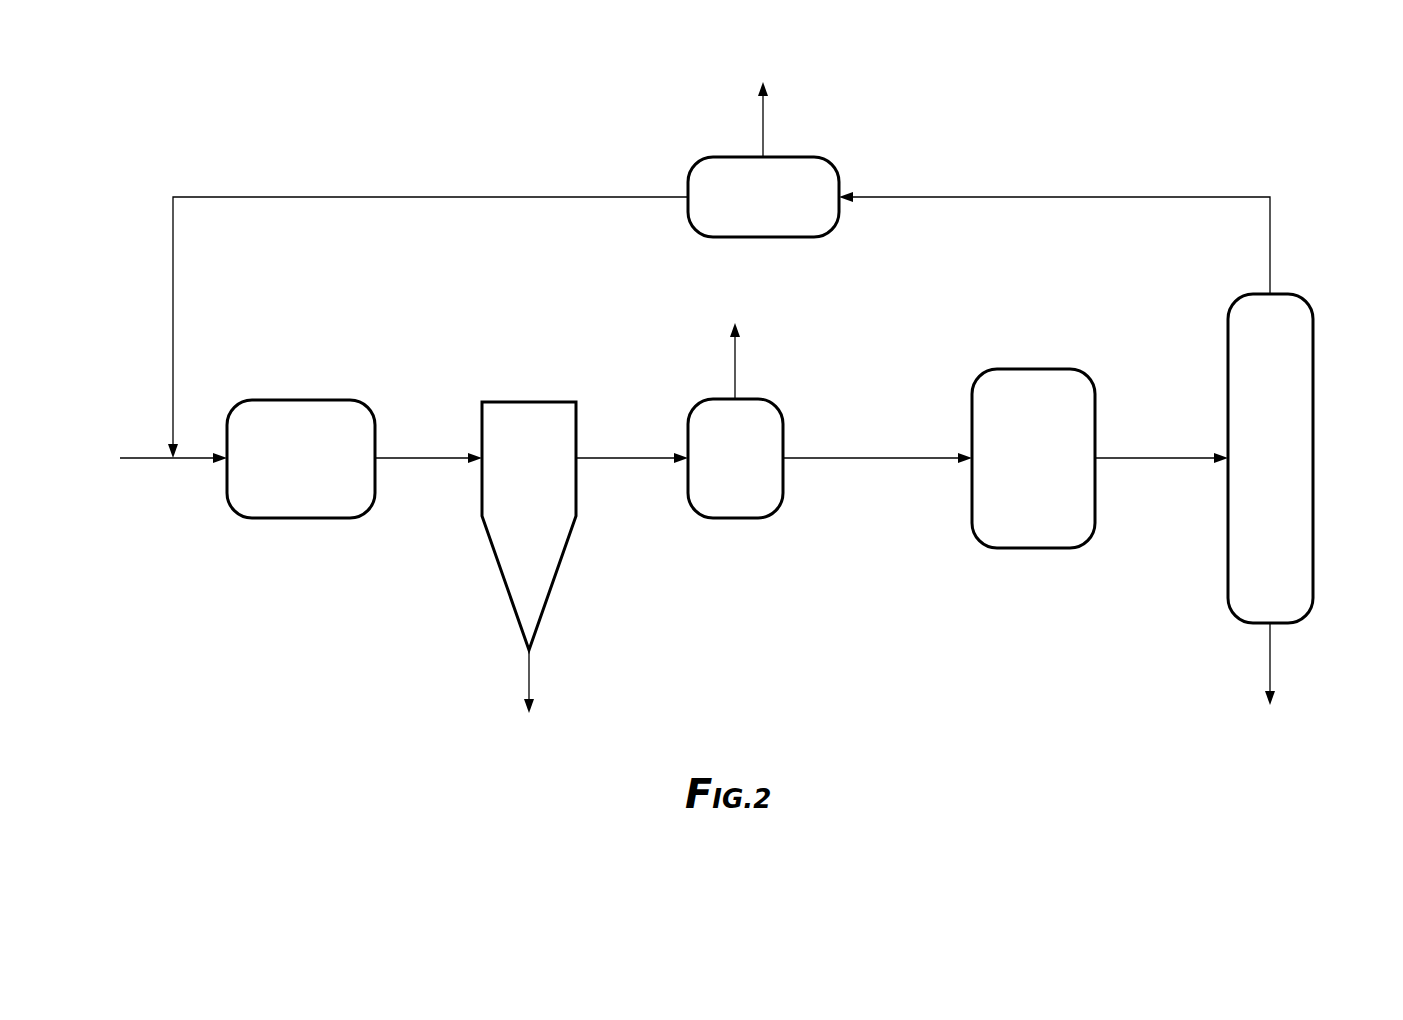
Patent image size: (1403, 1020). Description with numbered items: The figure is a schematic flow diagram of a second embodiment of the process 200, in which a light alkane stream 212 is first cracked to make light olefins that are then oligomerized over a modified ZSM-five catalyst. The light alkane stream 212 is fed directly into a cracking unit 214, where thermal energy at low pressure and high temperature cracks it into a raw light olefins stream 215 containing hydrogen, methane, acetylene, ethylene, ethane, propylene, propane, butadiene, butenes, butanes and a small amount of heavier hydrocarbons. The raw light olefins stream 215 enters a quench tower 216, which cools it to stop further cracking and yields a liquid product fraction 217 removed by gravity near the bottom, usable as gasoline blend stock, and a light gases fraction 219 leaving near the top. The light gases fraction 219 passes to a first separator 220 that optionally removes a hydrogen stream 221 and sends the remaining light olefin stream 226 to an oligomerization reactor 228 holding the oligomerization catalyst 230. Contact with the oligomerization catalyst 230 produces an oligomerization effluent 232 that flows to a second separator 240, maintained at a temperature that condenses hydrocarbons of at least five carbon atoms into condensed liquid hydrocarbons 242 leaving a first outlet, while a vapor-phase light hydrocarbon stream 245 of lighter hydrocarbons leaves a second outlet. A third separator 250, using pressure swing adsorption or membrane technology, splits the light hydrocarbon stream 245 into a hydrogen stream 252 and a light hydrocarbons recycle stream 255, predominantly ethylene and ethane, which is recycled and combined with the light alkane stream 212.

The process system 200 is at (276, 114).
The light alkane stream 212 is at (128, 458).
The cracking unit 214 is at (301, 459).
The raw light olefins stream 215 is at (428, 458).
The quench tower 216 is at (529, 526).
The liquid product fraction 217 is at (529, 670).
The light gases fraction 219 is at (628, 458).
The first separator 220 is at (735, 458).
The hydrogen stream 221 is at (735, 360).
The light olefin stream 226 is at (865, 458).
The oligomerization reactor 228 is at (980, 355).
The oligomerization catalyst 230 is at (1033, 458).
The oligomerization effluent 232 is at (1158, 458).
The second separator 240 is at (1270, 458).
The condensed liquid hydrocarbons 242 is at (1270, 650).
The light hydrocarbon stream 245 is at (1271, 225).
The third separator 250 is at (763, 197).
The hydrogen stream 252 is at (763, 110).
The light hydrocarbons recycle stream 255 is at (173, 226).